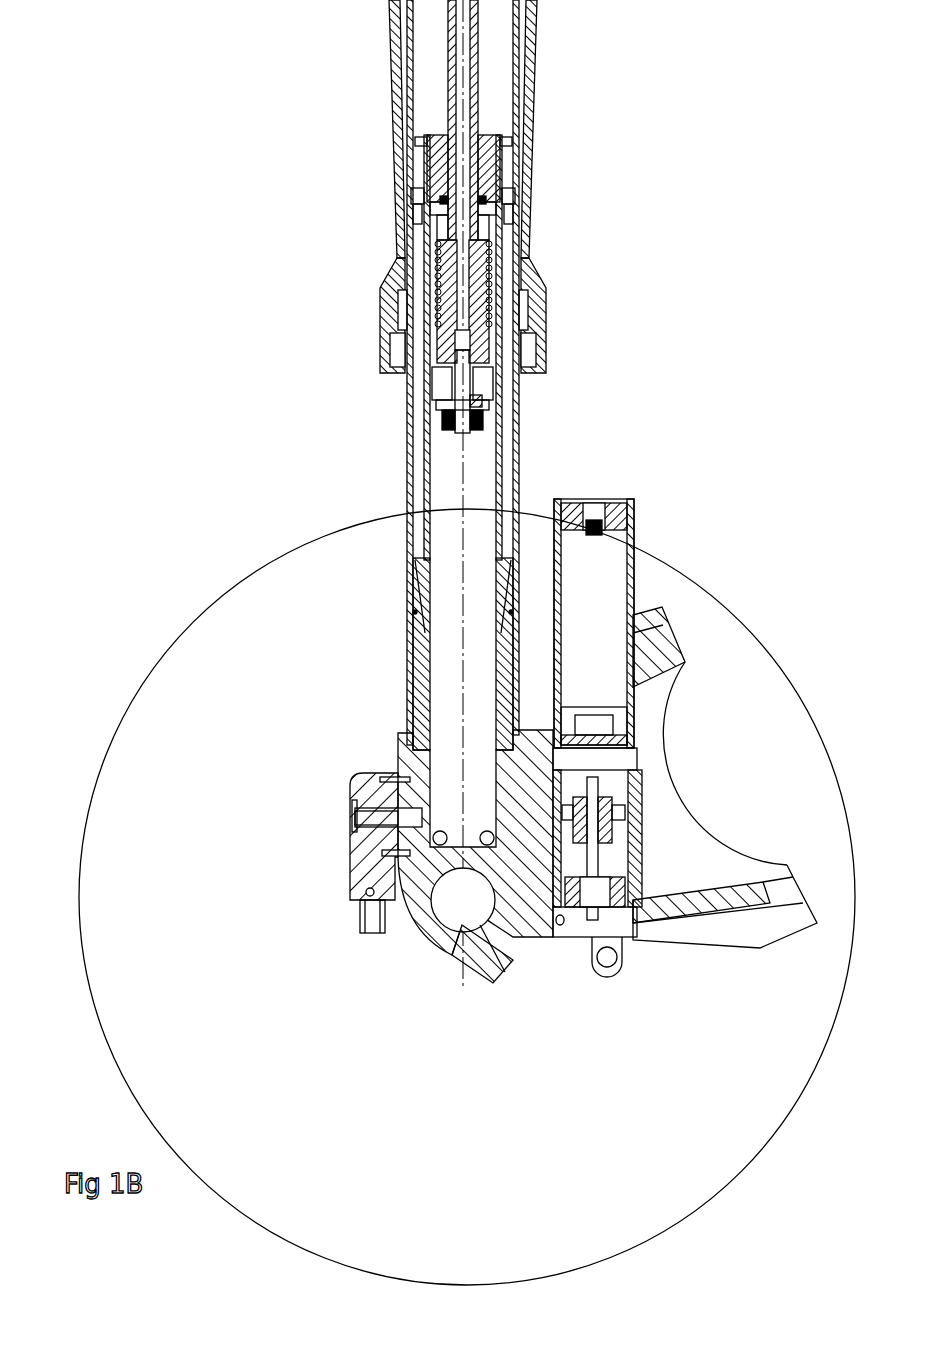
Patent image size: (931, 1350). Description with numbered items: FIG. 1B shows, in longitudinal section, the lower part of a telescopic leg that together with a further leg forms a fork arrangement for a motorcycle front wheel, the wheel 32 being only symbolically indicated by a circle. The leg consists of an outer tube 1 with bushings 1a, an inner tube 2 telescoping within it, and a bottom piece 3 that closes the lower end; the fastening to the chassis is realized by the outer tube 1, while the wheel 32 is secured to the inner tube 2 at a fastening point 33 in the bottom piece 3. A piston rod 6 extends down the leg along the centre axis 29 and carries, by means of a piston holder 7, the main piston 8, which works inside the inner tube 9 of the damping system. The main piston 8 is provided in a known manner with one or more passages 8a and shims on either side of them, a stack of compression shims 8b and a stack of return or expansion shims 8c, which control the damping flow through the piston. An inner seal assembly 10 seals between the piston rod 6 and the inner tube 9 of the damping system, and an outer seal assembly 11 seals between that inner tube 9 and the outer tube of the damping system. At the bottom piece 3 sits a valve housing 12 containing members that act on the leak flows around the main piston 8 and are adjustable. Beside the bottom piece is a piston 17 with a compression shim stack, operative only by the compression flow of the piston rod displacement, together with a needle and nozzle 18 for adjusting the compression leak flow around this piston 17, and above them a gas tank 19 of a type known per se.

The outer tube 1 is at (533, 168).
The bushings 1a is at (528, 300).
The inner tube 2 is at (522, 440).
The bottom piece 3 is at (395, 752).
The piston rod 6 is at (465, 36).
The piston holder 7 is at (485, 347).
The main piston 8 is at (442, 392).
The passages 8a is at (487, 382).
The stack of compression shims 8b is at (440, 372).
The stack of return or expansion shims 8c is at (490, 403).
The inner tube of the damping system 9 is at (423, 482).
The inner seal assembly 10 is at (434, 157).
The outer seal assembly 11 is at (413, 196).
The valve housing 12 is at (350, 862).
The piston with compression shim stack 17 is at (620, 805).
The needle and nozzle 18 is at (610, 847).
The gas tank 19 is at (592, 575).
The centre axis 29 is at (458, 968).
The front wheel 32 is at (667, 1236).
The fastening point 33 is at (463, 900).